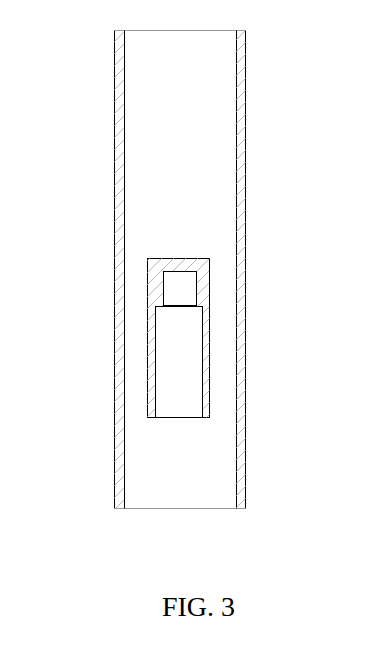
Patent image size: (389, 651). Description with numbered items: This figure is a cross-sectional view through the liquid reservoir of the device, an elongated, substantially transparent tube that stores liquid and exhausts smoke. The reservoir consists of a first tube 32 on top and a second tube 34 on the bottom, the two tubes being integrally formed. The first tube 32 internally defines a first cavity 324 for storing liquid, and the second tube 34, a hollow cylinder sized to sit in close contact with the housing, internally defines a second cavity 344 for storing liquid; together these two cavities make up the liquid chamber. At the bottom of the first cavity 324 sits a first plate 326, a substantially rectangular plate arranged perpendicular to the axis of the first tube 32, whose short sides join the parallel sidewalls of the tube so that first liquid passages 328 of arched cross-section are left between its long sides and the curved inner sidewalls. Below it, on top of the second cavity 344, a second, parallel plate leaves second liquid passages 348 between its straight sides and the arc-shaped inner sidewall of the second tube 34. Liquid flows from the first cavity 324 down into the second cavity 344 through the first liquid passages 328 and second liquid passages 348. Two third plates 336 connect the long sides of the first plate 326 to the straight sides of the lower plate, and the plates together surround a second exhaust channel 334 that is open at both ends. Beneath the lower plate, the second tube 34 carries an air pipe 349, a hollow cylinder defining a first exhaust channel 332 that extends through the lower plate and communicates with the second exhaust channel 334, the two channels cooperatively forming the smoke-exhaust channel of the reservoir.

The first tube 32 is at (116, 101).
The first cavity 324 is at (223, 103).
The second tube 34 is at (115, 430).
The second cavity 344 is at (203, 447).
The first plate 326 is at (177, 262).
The third plates 336 is at (156, 293).
The second exhaust channel 334 is at (180, 285).
The first exhaust channel 332 is at (190, 372).
The air pipe 349 is at (153, 363).
The first liquid passages 328 is at (220, 263).
The second liquid passages 348 is at (220, 313).